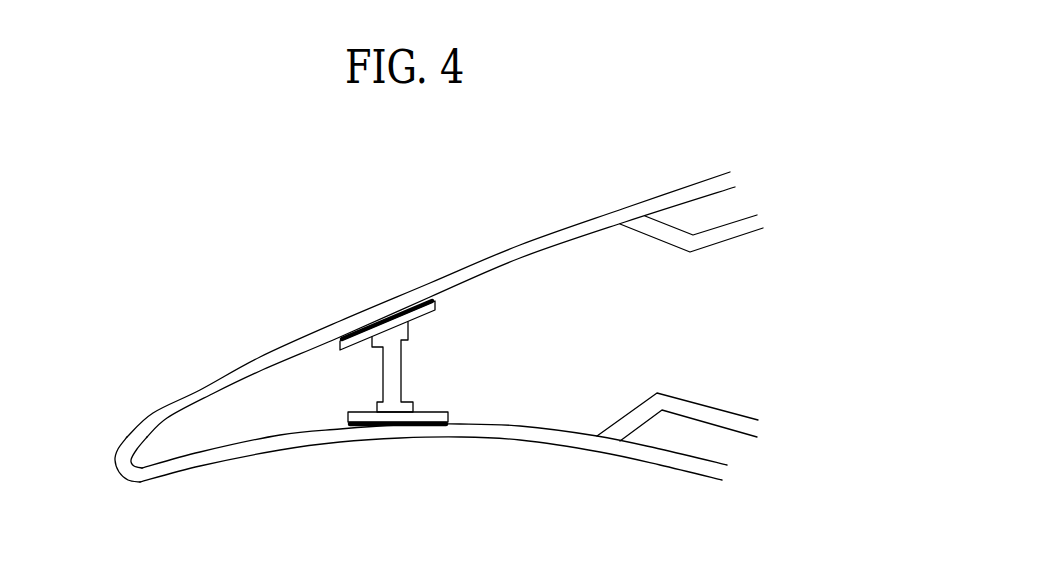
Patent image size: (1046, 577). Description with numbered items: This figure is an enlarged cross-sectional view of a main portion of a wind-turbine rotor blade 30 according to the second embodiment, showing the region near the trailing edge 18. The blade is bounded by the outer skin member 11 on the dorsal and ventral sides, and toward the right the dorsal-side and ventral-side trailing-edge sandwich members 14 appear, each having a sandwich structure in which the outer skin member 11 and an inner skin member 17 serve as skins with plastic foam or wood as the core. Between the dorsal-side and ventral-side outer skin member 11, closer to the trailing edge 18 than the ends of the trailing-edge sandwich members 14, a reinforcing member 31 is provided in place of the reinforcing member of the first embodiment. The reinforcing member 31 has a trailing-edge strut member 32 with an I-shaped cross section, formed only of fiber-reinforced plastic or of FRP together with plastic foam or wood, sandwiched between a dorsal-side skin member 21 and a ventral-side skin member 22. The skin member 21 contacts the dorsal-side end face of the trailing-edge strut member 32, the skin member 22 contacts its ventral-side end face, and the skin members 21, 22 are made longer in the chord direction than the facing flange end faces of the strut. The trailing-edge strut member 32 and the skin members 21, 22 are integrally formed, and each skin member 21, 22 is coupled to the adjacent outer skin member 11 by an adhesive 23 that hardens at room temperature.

The outer skin member 11 is at (562, 237).
The trailing-edge sandwich member 14 is at (705, 208).
The inner skin member 17 is at (730, 233).
The trailing edge 18 is at (117, 472).
The skin member 21 is at (437, 303).
The skin member 22 is at (433, 413).
The adhesive 23 is at (375, 336).
The wind-turbine rotor blade 30 is at (234, 192).
The reinforcing member 31 is at (500, 285).
The trailing-edge strut member 32 is at (396, 362).